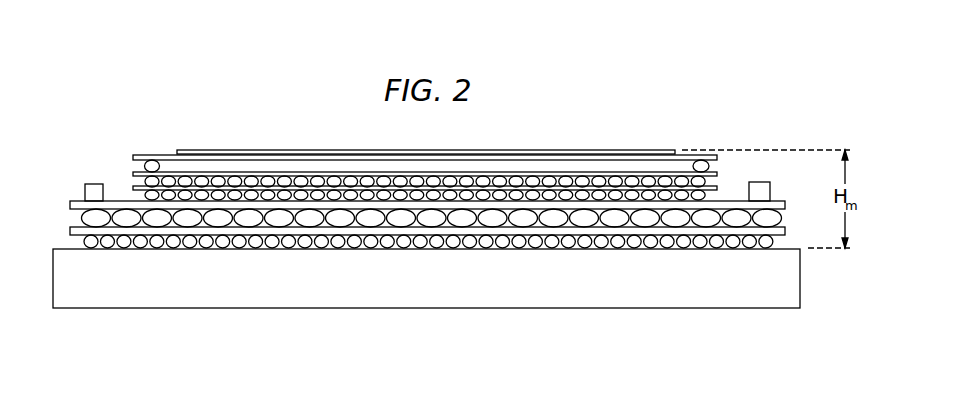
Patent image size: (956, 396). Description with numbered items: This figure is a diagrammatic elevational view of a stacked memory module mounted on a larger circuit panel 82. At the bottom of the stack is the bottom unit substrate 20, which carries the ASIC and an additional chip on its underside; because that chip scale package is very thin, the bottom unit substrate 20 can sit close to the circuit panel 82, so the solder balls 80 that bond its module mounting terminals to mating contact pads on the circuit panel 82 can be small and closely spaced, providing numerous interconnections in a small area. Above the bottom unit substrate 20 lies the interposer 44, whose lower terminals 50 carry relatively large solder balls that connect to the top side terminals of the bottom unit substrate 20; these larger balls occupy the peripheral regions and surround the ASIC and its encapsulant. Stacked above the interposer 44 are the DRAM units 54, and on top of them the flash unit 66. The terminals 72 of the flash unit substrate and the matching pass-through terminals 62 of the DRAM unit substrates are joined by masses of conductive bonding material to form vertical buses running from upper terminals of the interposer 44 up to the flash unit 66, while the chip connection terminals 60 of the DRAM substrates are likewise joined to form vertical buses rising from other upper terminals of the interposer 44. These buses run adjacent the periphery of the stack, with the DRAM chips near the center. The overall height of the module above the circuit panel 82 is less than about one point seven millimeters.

The circuit panel 82 is at (90, 294).
The solder balls 80 is at (203, 243).
The lower terminals 50 is at (272, 223).
The bottom unit substrate 20 is at (70, 232).
The interposer 44 is at (70, 206).
The DRAM units 54 is at (135, 186).
The pass-through terminals 62 is at (151, 172).
The chip connection terminals 60 is at (295, 182).
The flash unit 66 is at (135, 156).
The terminals of the flash unit substrate 72 is at (152, 158).